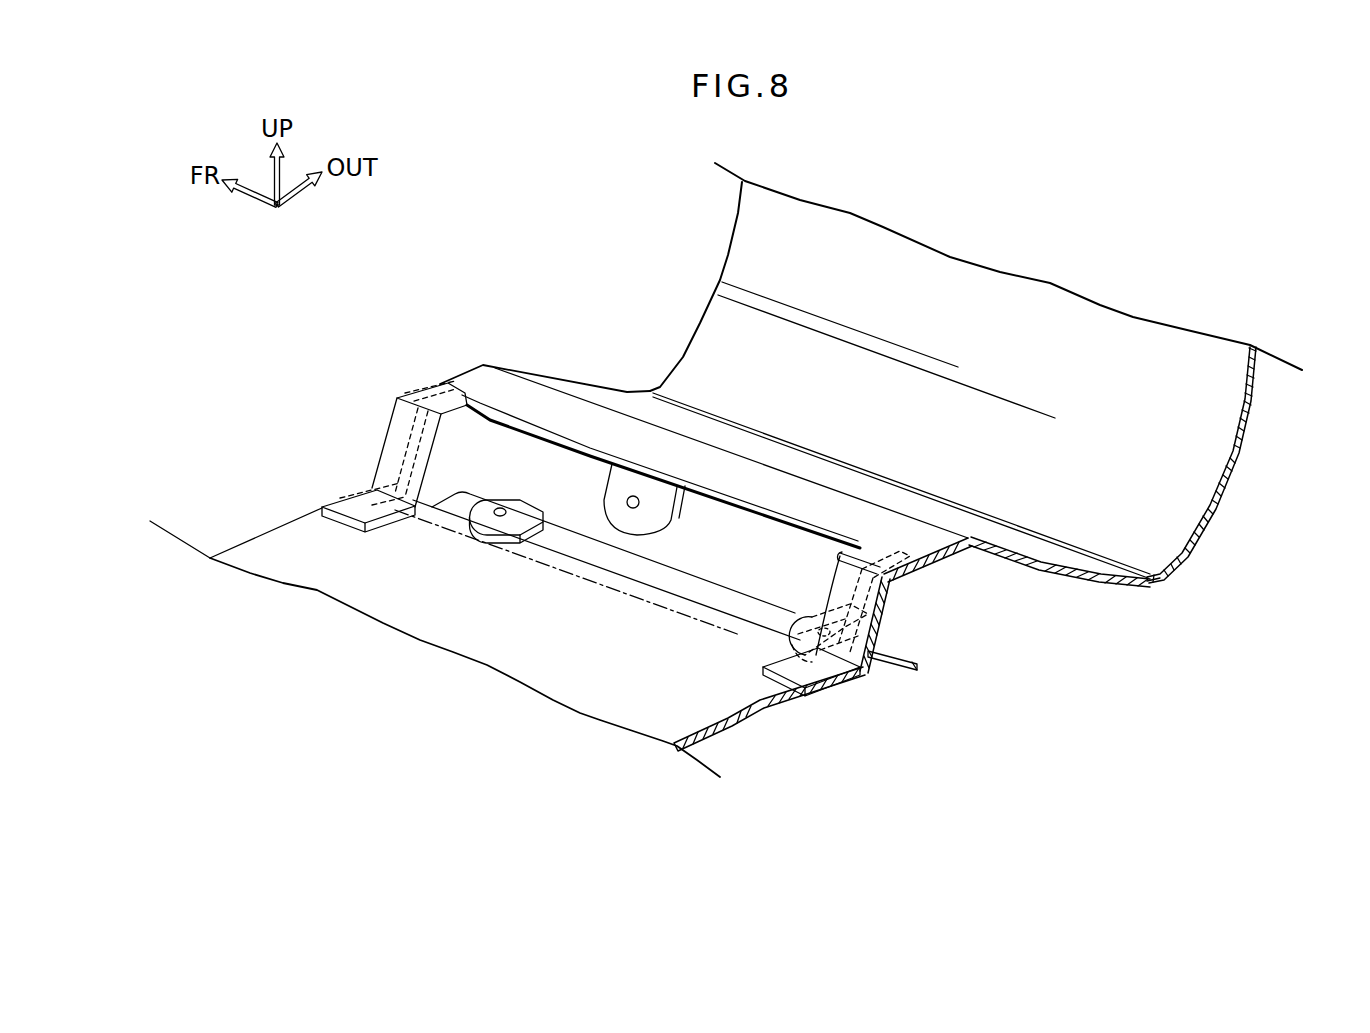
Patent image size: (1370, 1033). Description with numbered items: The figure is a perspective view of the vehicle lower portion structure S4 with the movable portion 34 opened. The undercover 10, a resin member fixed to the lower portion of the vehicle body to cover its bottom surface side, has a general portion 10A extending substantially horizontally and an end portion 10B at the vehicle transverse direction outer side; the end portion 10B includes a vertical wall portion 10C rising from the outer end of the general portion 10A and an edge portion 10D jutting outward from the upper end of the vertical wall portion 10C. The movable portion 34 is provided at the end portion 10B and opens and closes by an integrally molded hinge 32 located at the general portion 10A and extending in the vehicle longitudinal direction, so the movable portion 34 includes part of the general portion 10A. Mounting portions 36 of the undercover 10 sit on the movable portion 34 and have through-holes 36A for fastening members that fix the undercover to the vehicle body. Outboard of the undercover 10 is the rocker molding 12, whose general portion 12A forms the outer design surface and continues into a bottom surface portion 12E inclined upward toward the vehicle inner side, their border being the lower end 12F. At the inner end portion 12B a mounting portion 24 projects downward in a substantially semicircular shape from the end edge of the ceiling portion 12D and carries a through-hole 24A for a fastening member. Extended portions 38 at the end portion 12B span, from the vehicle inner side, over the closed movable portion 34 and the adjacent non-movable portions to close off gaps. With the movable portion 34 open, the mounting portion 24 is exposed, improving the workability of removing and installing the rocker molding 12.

The undercover 10 is at (618, 557).
The general portion 10A is at (747, 727).
The end portion 10B is at (659, 488).
The vertical wall portion 10C is at (378, 452).
The edge portion 10D is at (428, 388).
The rocker molding 12 is at (1262, 457).
The general portion 12A is at (1255, 395).
The end portion 12B is at (573, 538).
The ceiling portion 12D is at (705, 455).
The bottom surface portion 12E is at (972, 520).
The lower end 12F is at (1165, 583).
The mounting portion 24 is at (622, 532).
The through-hole 24A is at (630, 507).
The hinge 32 is at (600, 593).
The movable portion 34 is at (896, 664).
The mounting portion 36 is at (626, 558).
The through-hole 36A is at (500, 510).
The extended portion 38 is at (394, 418).
The vehicle lower portion structure S4 is at (508, 254).